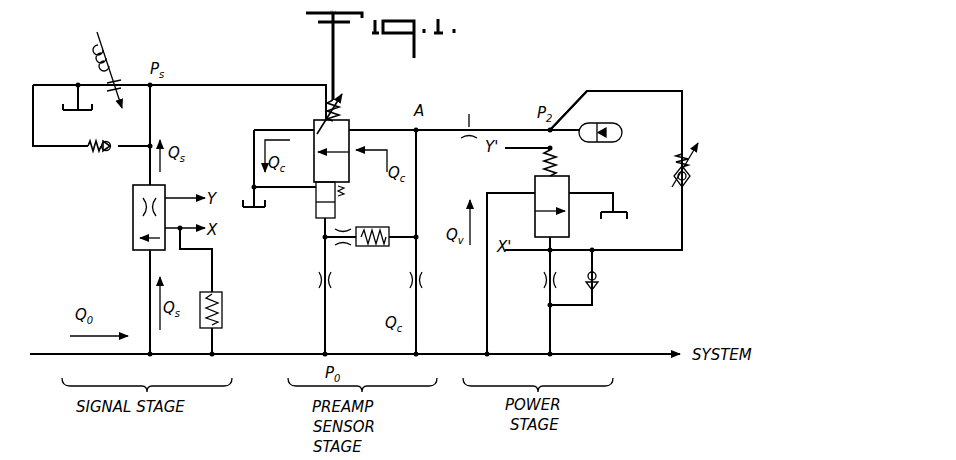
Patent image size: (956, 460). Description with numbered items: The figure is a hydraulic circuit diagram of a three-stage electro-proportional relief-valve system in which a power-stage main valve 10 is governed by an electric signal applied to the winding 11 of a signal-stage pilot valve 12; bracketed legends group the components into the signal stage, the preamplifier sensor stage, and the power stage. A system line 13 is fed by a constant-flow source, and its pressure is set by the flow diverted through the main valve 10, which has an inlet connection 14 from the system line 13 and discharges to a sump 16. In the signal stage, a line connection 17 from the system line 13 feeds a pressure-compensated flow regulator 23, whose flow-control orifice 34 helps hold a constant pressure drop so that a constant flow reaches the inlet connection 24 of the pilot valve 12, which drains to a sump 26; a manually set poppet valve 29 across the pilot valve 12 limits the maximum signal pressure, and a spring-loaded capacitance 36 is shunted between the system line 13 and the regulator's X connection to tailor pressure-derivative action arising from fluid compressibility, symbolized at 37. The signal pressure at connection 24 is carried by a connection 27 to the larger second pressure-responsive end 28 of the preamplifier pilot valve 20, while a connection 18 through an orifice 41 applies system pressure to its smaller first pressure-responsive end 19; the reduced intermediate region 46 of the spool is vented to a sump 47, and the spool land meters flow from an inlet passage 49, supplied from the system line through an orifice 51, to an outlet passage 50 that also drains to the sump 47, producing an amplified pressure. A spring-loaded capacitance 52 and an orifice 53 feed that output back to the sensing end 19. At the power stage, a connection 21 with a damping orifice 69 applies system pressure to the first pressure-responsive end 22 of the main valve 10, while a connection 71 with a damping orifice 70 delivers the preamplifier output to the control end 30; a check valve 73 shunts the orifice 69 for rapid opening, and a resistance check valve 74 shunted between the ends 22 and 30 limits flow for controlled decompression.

The power-stage main valve 10 is at (572, 180).
The winding 11 is at (102, 38).
The signal-stage pilot valve 12 is at (128, 70).
The system line 13 is at (453, 362).
The inlet connection 14 is at (485, 314).
The sump 16 is at (625, 218).
The line connection 17 is at (148, 300).
The connection 18 is at (322, 313).
The first pressure-responsive end 19 is at (326, 219).
The preamplifier pilot valve 20 is at (352, 116).
The connection 21 is at (548, 321).
The first pressure-responsive end 22 is at (560, 238).
The pressure-compensated flow regulator 23 is at (130, 199).
The connection 24 is at (154, 90).
The sump 26 is at (82, 113).
The connection 27 is at (227, 84).
The second pressure-responsive end 28 is at (314, 123).
The poppet valve 29 is at (94, 162).
The control end 30 is at (536, 178).
The flow-control orifice 34 is at (142, 208).
The spring-loaded capacitance 36 is at (222, 314).
The hydraulic fluid resilience 37 is at (611, 125).
The orifice 41 is at (316, 281).
The reduced intermediate region 46 is at (312, 198).
The sump 47 is at (266, 208).
The inlet passage 49 is at (364, 131).
The outlet passage 50 is at (280, 130).
The orifice 51 is at (408, 277).
The spring-loaded capacitance 52 is at (380, 227).
The orifice 53 is at (343, 226).
The damping orifice 69 is at (543, 280).
The damping orifice 70 is at (472, 112).
The connection 71 is at (437, 135).
The check valve 73 is at (599, 278).
The resistance check valve 74 is at (692, 179).